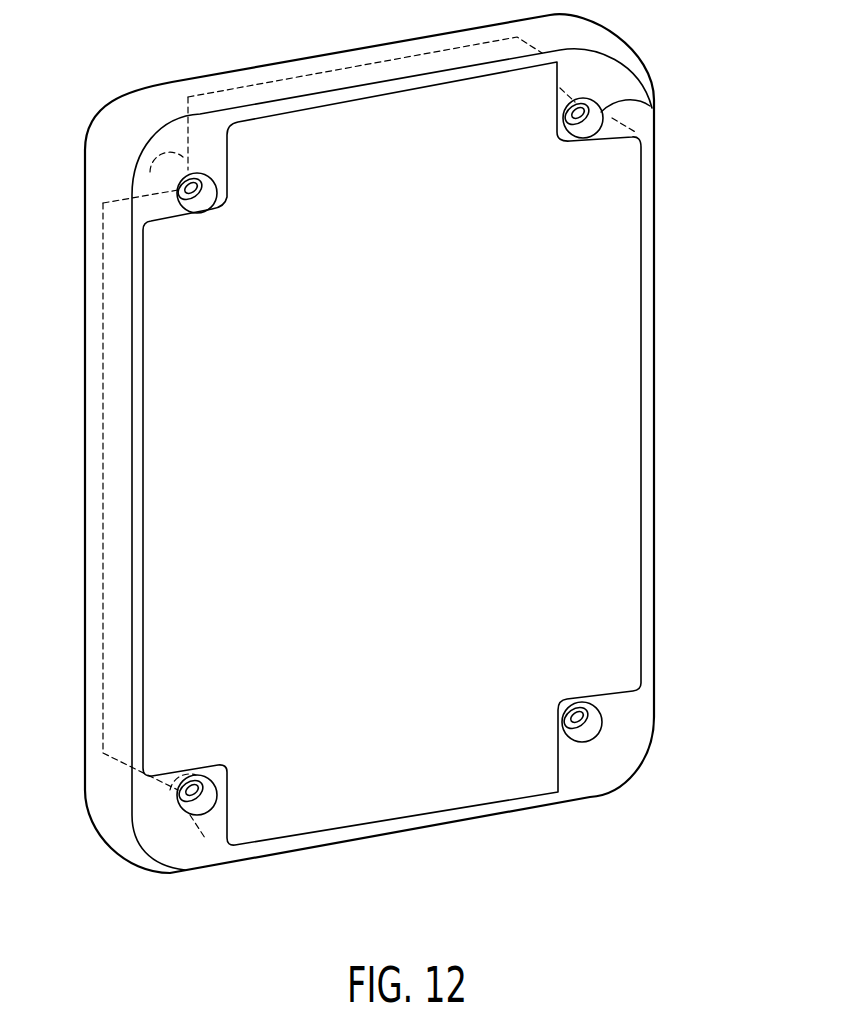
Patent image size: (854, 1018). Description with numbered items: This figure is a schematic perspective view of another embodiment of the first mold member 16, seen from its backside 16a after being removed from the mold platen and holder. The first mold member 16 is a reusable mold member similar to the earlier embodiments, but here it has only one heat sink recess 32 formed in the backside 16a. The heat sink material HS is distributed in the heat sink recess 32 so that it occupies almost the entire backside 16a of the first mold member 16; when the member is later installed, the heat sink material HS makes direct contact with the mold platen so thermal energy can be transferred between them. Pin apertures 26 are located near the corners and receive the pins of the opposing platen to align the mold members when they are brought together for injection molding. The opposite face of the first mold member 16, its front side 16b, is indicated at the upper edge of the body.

The first mold member 16 is at (623, 77).
The backside 16a is at (597, 562).
The front side 16b is at (172, 76).
The pin apertures 26 is at (200, 197).
The heat sink recess 32 is at (652, 387).
The heat sink material HS is at (152, 605).